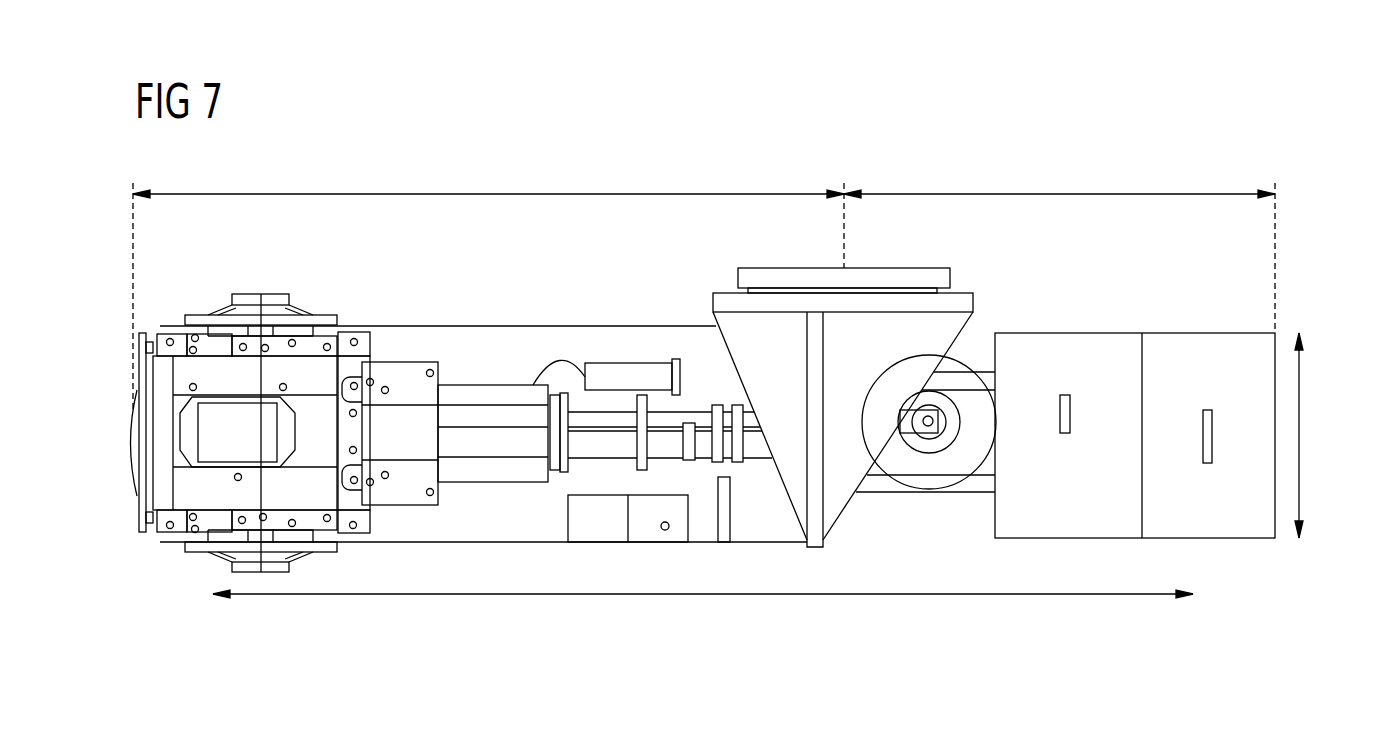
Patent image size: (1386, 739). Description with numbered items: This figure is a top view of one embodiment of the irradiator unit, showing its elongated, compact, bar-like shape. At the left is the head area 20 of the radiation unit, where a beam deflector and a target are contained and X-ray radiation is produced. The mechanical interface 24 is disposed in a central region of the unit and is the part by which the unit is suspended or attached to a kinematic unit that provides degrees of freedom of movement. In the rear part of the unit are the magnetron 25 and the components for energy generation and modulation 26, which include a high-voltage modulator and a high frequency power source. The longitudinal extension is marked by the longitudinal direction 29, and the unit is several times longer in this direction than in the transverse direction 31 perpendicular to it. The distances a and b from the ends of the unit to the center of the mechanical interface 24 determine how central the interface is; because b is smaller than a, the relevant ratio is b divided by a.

The head area 20 is at (210, 445).
The mechanical interface 24 is at (767, 278).
The magnetron 25 is at (973, 410).
The components for energy generation and modulation 26 is at (1205, 350).
The longitudinal direction 29 is at (707, 598).
The transverse direction 31 is at (1299, 435).
The distance a is at (488, 193).
The distance b is at (1059, 193).